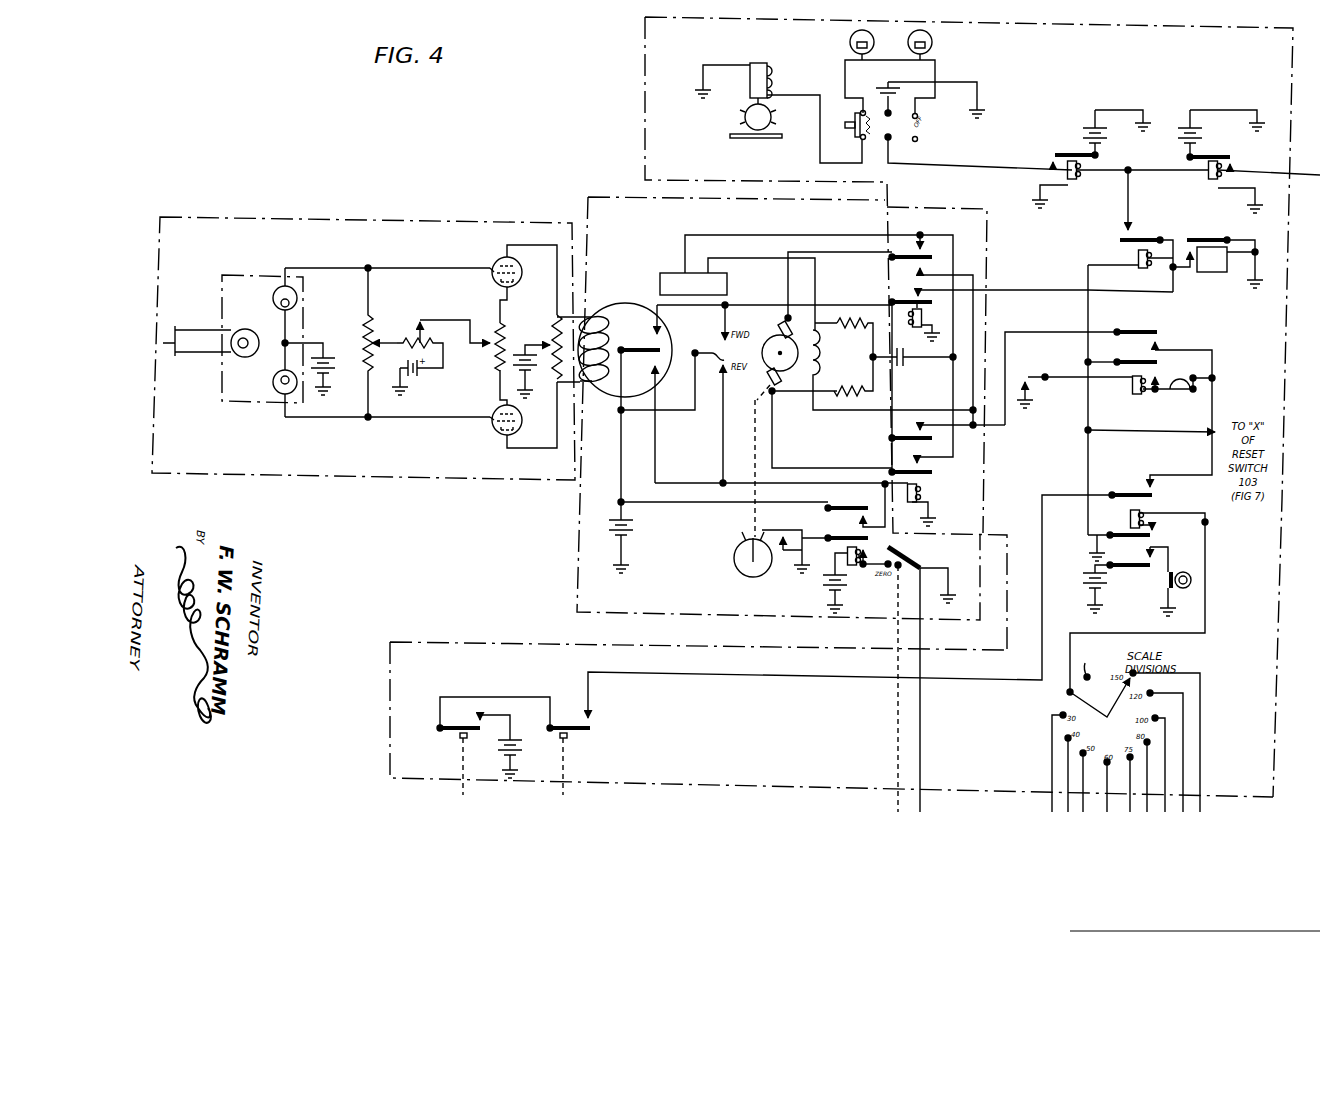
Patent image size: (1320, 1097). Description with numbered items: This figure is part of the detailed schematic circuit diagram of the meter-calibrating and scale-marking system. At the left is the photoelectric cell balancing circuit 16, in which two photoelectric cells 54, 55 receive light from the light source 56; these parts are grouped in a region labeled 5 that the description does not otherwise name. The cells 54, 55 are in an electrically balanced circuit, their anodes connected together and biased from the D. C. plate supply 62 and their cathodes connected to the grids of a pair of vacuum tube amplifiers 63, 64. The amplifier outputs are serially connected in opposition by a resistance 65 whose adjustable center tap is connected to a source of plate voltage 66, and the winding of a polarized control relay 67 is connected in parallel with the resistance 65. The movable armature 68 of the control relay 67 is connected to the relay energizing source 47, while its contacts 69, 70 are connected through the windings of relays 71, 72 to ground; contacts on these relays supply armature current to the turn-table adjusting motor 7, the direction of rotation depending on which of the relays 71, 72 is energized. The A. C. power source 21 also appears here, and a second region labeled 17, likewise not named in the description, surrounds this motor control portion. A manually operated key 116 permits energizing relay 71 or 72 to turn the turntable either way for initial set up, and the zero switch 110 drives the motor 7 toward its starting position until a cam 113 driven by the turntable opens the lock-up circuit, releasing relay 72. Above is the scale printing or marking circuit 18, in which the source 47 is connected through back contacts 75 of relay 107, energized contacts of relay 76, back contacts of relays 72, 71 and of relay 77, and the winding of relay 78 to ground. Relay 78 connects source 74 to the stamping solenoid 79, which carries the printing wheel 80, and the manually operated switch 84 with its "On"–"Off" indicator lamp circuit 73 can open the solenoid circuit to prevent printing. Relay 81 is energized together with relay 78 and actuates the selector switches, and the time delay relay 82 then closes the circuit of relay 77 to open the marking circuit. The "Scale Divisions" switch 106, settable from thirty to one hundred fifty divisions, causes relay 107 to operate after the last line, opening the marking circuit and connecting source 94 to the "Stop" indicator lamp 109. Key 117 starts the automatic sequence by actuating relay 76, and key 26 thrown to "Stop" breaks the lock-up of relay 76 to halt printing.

The photoelectric scanning head 5 is at (217, 386).
The turn-table adjusting motor 7 is at (780, 351).
The photoelectric cell balancing circuit 16 is at (352, 217).
The motor control unit 17 is at (574, 558).
The scale printing or marking circuit 18 is at (645, 84).
The A. C. power source 21 is at (660, 288).
The key 26 is at (1029, 360).
The relay energizing source 47 is at (625, 521).
The photoelectric cell 54 is at (276, 300).
The photoelectric cell 55 is at (276, 386).
The light source 56 is at (249, 337).
The D. C. plate supply 62 is at (328, 352).
The vacuum tube amplifier 63 is at (510, 273).
The vacuum tube amplifier 64 is at (492, 415).
The resistance 65 is at (556, 337).
The source of plate voltage 66 is at (504, 357).
The polarized control relay 67 is at (588, 392).
The movable armature 68 is at (652, 345).
The contact 69 is at (659, 316).
The contact 70 is at (666, 384).
The relay 71 is at (922, 304).
The relay 72 is at (927, 496).
The "On"–"Off" indicator lamp circuit 73 is at (936, 52).
The source 74 is at (1090, 128).
The back contacts of relay 107 75 is at (1135, 492).
The relay 76 is at (1156, 332).
The relay 77 is at (1130, 228).
The relay 78 is at (1076, 189).
The stamping solenoid 79 is at (749, 72).
The printing wheel 80 is at (742, 124).
The relay 81 is at (1210, 192).
The time delay relay 82 is at (1198, 242).
The manually operated switch 84 is at (869, 125).
The source 94 is at (1126, 569).
The "Scale Divisions" switch 106 is at (1098, 684).
The relay 107 is at (1127, 516).
The "Stop" indicator lamp 109 is at (1174, 581).
The zero switch 110 is at (911, 558).
The cam 113 is at (737, 559).
The manually operated key 116 is at (709, 351).
The key 117 is at (1128, 395).